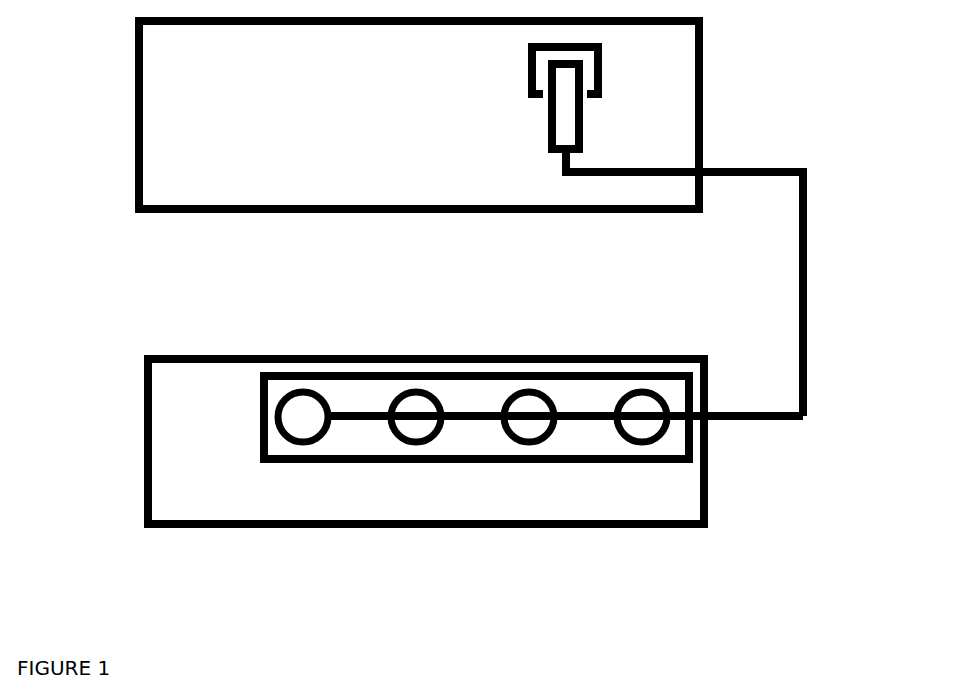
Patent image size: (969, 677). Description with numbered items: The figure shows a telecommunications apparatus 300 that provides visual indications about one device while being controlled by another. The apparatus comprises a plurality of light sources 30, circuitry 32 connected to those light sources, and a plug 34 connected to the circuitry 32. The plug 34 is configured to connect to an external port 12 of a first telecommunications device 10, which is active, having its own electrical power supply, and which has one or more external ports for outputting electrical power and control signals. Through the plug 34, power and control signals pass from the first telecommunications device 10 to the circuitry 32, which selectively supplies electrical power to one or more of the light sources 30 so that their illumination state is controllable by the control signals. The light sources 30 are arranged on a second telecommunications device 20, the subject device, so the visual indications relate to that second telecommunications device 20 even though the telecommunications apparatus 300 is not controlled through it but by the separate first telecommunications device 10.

The first telecommunications device 10 is at (419, 115).
The external port 12 is at (525, 60).
The plug 34 is at (546, 112).
The telecommunications apparatus 300 is at (822, 191).
The second telecommunications device 20 is at (426, 441).
The plurality of light sources 30 is at (297, 405).
The circuitry 32 is at (371, 378).